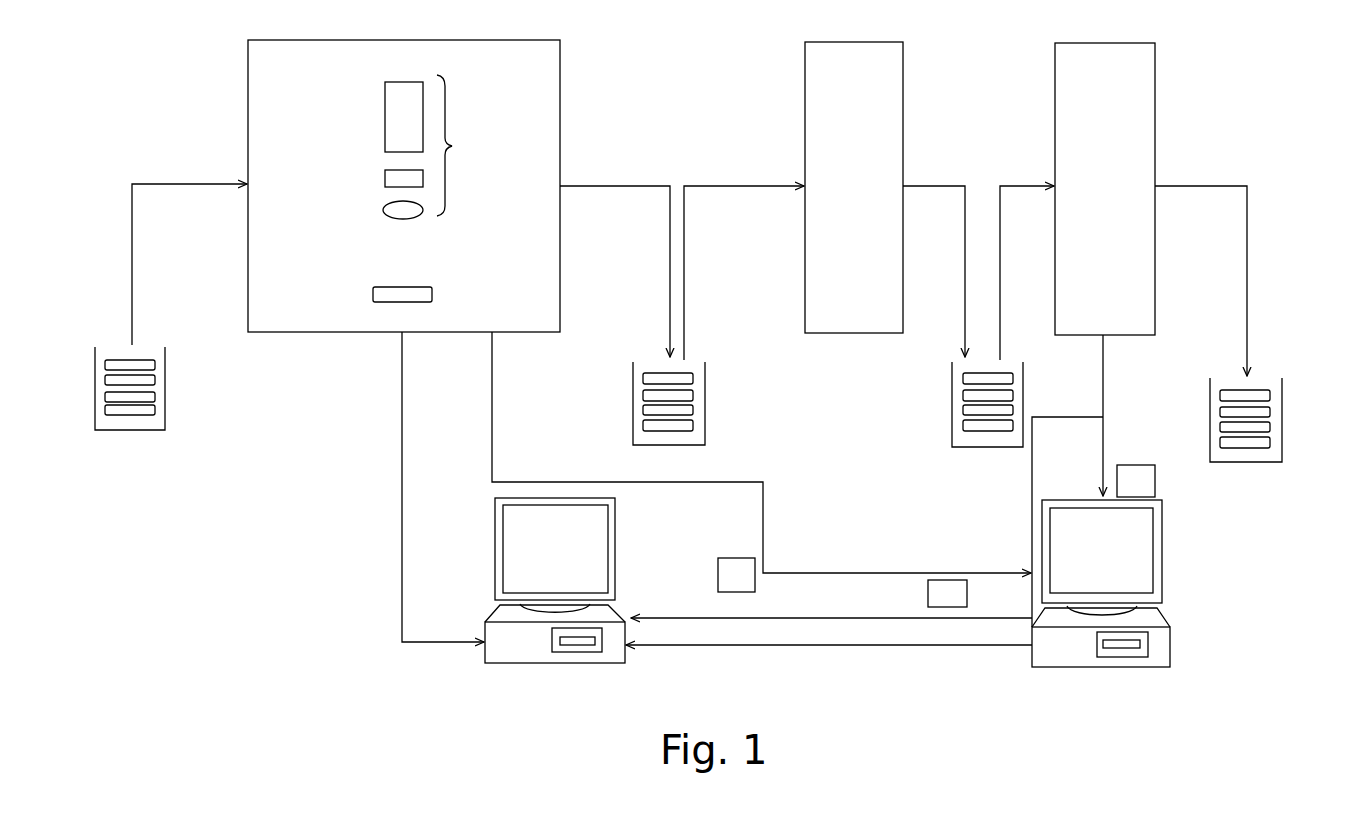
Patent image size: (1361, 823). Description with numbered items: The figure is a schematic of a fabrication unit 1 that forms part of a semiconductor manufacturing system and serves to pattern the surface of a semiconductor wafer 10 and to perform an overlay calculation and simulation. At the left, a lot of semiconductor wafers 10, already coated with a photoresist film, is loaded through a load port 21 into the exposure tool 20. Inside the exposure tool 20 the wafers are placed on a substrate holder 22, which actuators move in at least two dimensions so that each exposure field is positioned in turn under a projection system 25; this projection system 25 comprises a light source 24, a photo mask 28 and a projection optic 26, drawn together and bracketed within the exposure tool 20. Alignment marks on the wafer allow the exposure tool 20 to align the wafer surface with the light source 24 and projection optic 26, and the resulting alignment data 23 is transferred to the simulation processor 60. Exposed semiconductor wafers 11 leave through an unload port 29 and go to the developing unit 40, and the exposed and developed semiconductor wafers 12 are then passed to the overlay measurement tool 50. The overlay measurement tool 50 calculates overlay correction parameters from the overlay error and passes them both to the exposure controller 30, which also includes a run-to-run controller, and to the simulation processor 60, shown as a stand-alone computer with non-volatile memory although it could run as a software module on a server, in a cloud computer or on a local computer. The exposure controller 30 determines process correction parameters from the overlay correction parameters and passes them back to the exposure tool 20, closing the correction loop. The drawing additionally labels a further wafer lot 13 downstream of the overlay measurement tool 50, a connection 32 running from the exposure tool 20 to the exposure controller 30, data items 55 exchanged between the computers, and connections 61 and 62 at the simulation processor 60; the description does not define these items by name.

The fabrication unit 1 is at (155, 158).
The semiconductor wafer 10 is at (181, 403).
The exposed semiconductor wafers 11 is at (622, 391).
The exposed and developed semiconductor wafers 12 is at (943, 416).
The server 13 is at (1284, 438).
The exposure tool 20 is at (563, 73).
The load port 21 is at (189, 264).
The substrate holder 22 is at (373, 294).
The alignment data 23 is at (831, 599).
The light source 24 is at (378, 110).
The projection system 25 is at (463, 145).
The projection optic 26 is at (378, 212).
The photo mask 28 is at (378, 176).
The unload port 29 is at (615, 258).
The exposure controller 30 is at (617, 547).
The connection 32 is at (400, 558).
The developing unit 40 is at (877, 70).
The overlay measurement tool 50 is at (1132, 72).
The data 55 is at (823, 462).
The simulation processor 60 is at (1165, 563).
The connection 61 is at (1103, 425).
The connection 62 is at (830, 640).